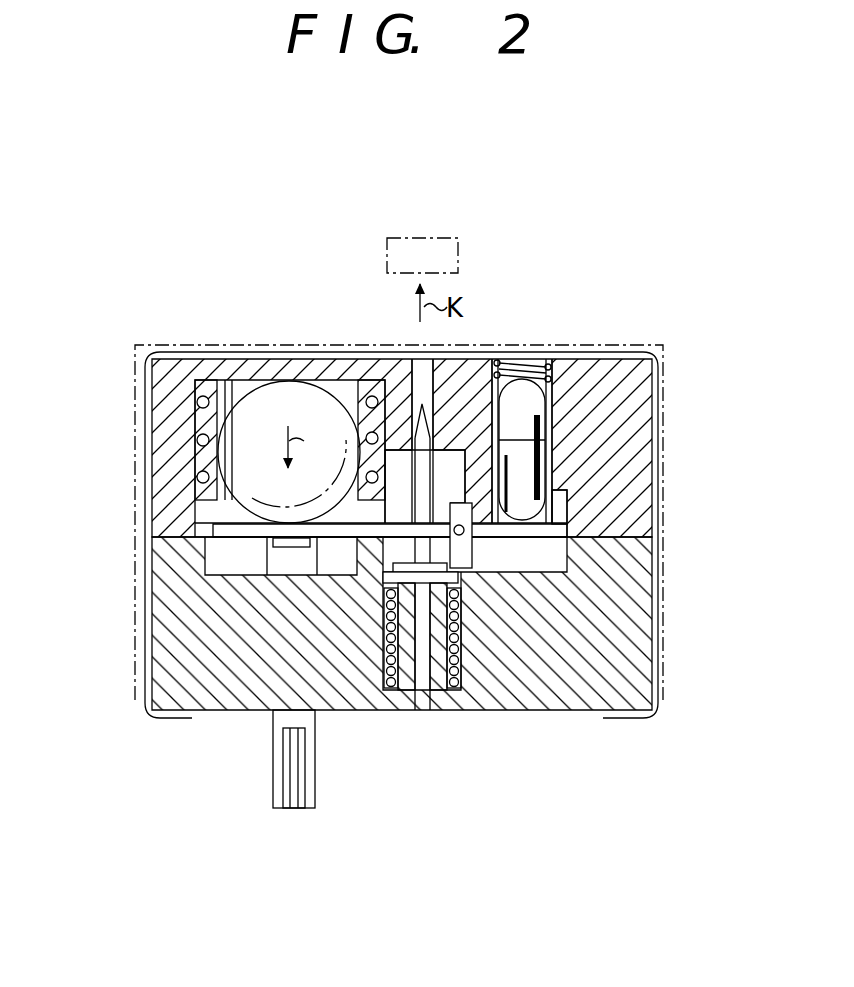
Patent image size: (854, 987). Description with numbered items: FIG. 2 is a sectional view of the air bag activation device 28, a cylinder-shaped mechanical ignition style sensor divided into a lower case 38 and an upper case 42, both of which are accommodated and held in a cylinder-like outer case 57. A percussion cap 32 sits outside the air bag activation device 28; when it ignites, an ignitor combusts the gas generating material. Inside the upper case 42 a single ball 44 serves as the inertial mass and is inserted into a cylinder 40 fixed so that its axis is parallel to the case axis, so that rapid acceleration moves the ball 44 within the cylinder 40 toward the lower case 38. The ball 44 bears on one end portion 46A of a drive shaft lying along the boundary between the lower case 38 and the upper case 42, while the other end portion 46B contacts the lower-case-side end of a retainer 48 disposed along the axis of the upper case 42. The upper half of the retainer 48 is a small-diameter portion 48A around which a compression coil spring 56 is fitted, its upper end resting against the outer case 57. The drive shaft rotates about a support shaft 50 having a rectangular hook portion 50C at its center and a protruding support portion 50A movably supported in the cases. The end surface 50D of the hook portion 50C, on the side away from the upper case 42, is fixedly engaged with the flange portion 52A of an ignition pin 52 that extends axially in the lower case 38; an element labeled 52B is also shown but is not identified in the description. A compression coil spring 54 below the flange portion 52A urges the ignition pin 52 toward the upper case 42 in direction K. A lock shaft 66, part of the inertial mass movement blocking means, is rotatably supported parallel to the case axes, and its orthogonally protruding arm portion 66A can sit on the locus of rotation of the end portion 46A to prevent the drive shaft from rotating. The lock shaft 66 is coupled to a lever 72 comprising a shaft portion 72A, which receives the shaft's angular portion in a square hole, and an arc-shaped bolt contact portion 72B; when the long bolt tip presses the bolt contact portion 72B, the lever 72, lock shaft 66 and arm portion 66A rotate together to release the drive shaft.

The air bag activation device 28 is at (670, 353).
The percussion cap 32 is at (460, 242).
The lower case 38 is at (646, 556).
The cylinder 40 is at (210, 383).
The upper case 42 is at (634, 418).
The ball 44 is at (283, 395).
The end portion of the drive shaft 46A is at (222, 527).
The other end portion of the drive shaft 46B is at (567, 563).
The retainer 48 is at (556, 508).
The small-diameter portion 48A is at (523, 368).
The support shaft 50 is at (468, 540).
The support portion 50A is at (507, 540).
The hook portion 50C is at (493, 562).
The end surface of the hook portion 50D is at (482, 578).
The ignition pin 52 is at (423, 700).
The flange portion 52A is at (385, 590).
The guide slot 52B is at (410, 398).
The compression coil spring 54 is at (393, 585).
The compression coil spring 56 is at (497, 365).
The outer case 57 is at (604, 349).
The lock shaft 66 is at (262, 553).
The arm portion 66A is at (290, 548).
The lever 72 is at (322, 809).
The shaft portion 72A is at (273, 757).
The bolt contact portion 72B is at (286, 808).